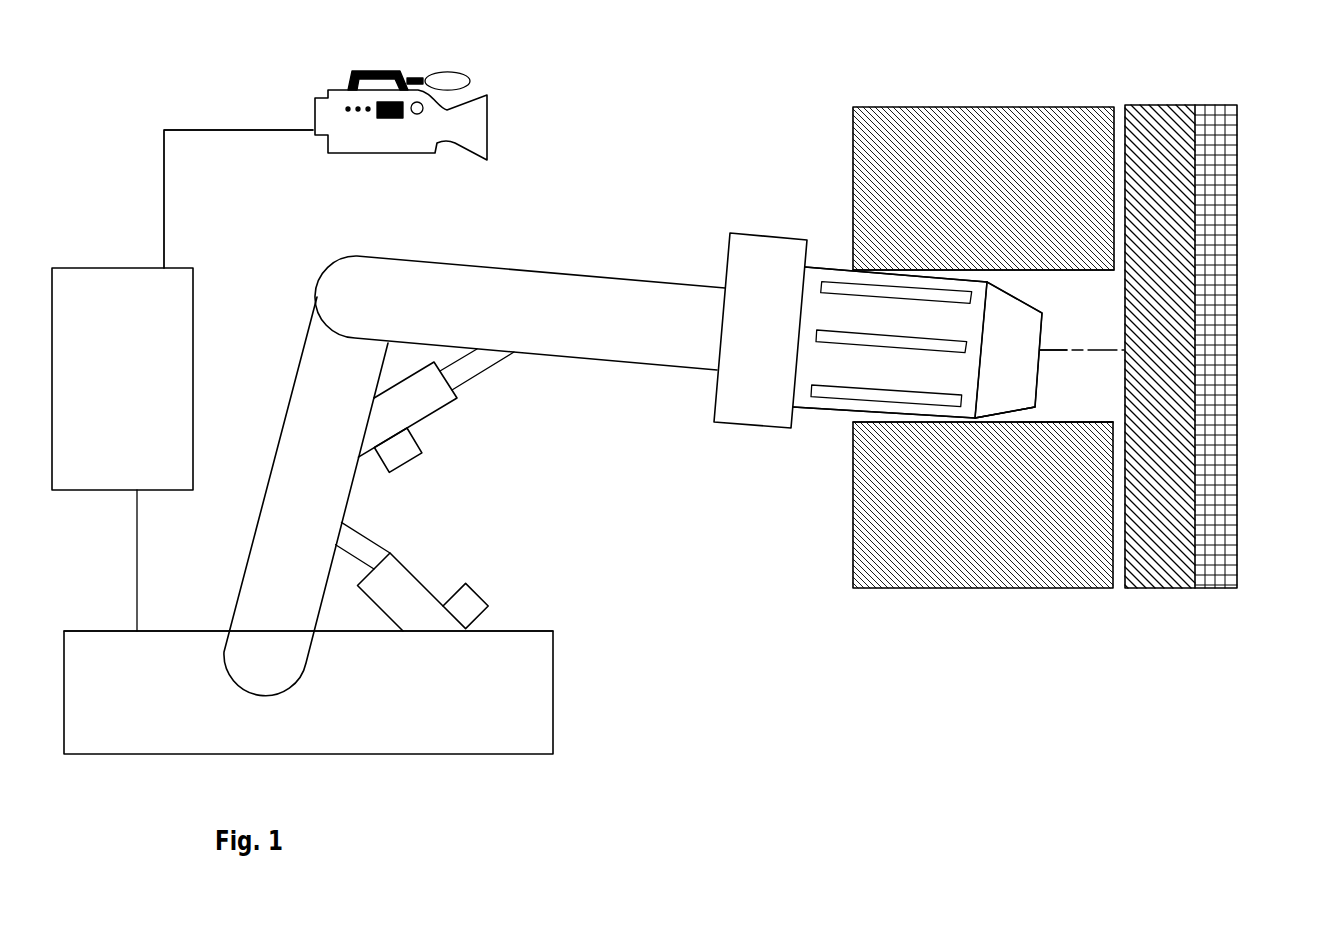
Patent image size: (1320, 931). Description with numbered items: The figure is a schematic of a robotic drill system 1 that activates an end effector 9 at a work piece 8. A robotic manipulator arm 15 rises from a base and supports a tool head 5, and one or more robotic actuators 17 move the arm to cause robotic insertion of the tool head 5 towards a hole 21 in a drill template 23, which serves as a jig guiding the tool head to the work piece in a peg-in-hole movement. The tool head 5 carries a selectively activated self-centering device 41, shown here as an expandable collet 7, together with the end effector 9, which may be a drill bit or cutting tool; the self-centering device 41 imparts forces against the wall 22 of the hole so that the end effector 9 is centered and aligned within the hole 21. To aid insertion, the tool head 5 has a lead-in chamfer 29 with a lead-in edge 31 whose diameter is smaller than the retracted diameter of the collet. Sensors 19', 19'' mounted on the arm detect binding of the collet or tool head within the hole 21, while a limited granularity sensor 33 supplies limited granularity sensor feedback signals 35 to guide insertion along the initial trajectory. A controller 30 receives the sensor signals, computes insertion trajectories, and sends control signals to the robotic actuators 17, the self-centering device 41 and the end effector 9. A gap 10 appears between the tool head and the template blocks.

The robotic drill system 1 is at (774, 686).
The tool head 5 is at (705, 421).
The expandable collet 7 is at (852, 367).
The work piece 8 is at (1143, 213).
The end effector 9 is at (1037, 362).
The gap 10 is at (863, 270).
The robotic manipulator arm 15 is at (473, 313).
The robotic actuator 17 is at (430, 387).
The sensor 19' is at (451, 528).
The sensor 19'' is at (760, 295).
The hole 21 is at (1052, 310).
The wall of the hole 22 is at (1048, 425).
The drill template 23 is at (984, 126).
The lead-in chamfer 29 is at (1013, 295).
The controller 30 is at (136, 301).
The lead-in edge 31 is at (1035, 407).
The limited granularity sensor 33 is at (330, 112).
The limited granularity sensor feedback signals 35 is at (192, 128).
The self-centering device 41 is at (877, 373).